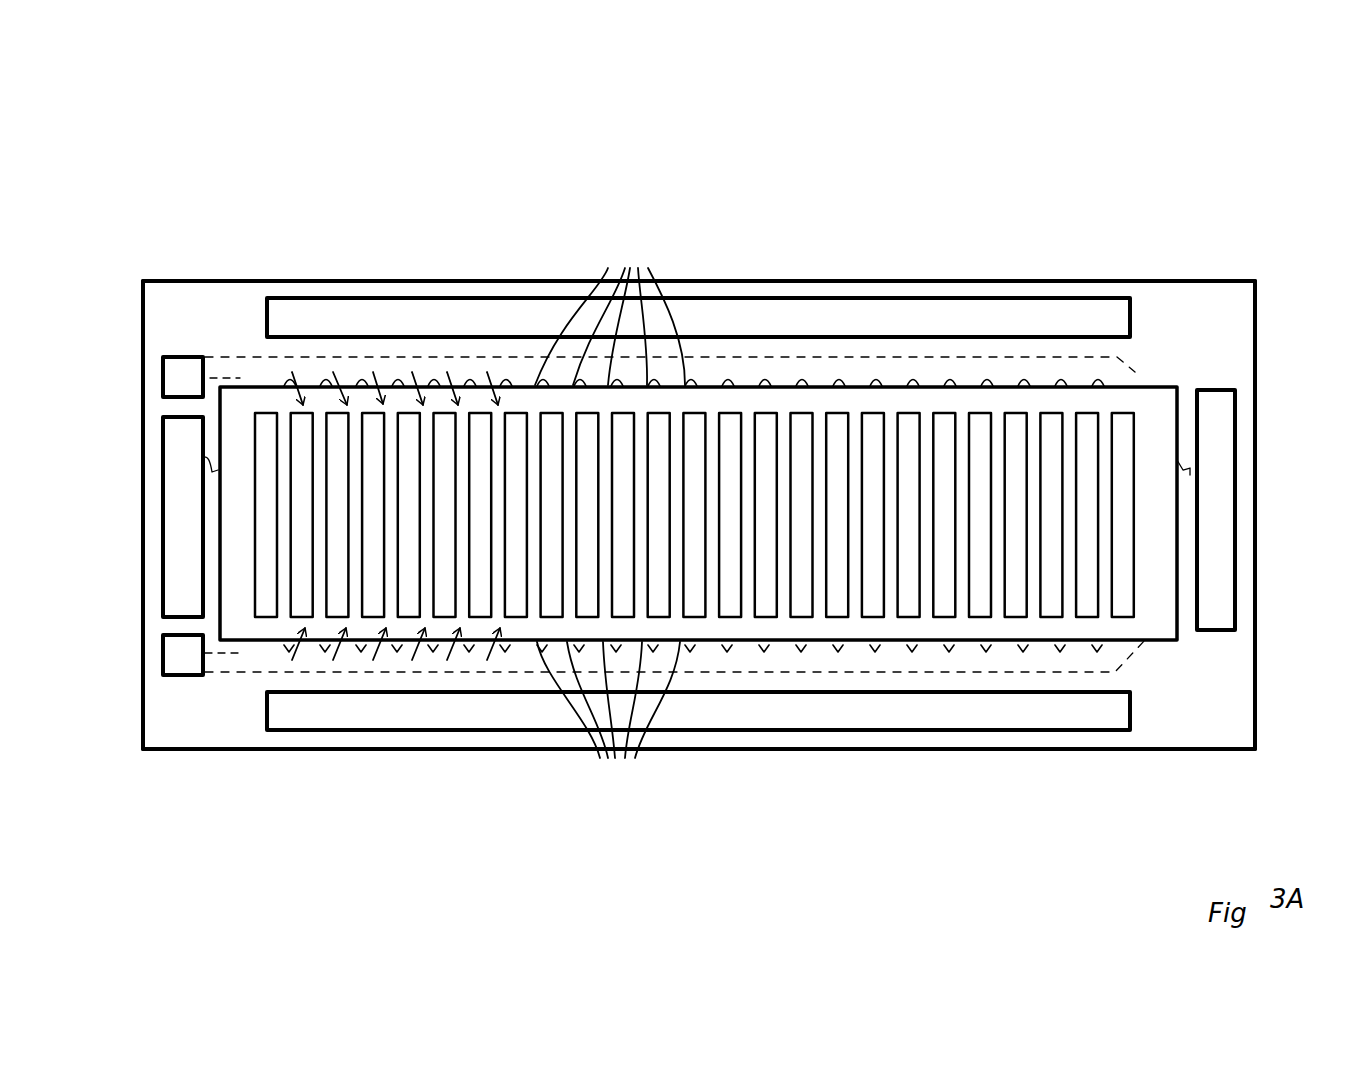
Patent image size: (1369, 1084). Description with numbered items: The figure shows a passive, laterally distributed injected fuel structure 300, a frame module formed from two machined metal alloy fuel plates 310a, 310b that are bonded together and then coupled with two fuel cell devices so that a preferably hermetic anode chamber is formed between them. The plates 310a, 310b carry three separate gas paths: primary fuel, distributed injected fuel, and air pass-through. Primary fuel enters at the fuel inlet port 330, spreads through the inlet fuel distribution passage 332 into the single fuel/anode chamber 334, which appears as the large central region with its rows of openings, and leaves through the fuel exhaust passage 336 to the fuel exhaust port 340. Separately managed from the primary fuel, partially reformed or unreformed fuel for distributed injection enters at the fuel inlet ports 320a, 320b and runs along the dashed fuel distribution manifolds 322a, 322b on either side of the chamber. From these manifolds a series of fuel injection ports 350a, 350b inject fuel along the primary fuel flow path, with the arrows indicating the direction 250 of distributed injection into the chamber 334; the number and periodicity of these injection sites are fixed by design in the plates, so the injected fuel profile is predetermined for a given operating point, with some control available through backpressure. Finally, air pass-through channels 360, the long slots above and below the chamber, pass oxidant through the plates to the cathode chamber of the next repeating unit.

The laterally distributed injected fuel structure 300 is at (693, 437).
The distributed injection direction 250 is at (487, 378).
The fuel plate 310a is at (1215, 280).
The fuel plate 310b is at (704, 475).
The fuel inlet port 320a is at (178, 373).
The fuel inlet port 320b is at (180, 660).
The fuel distribution manifold 322a is at (250, 365).
The fuel distribution manifold 322b is at (245, 665).
The fuel inlet port 330 is at (172, 505).
The inlet fuel distribution passage 332 is at (212, 472).
The single fuel/anode chamber 334 is at (1148, 625).
The fuel exhaust passage 336 is at (1195, 455).
The fuel exhaust port 340 is at (1220, 487).
The fuel injection ports 350a is at (610, 311).
The fuel injection ports 350b is at (608, 719).
The air pass-through channels 360 is at (362, 305).